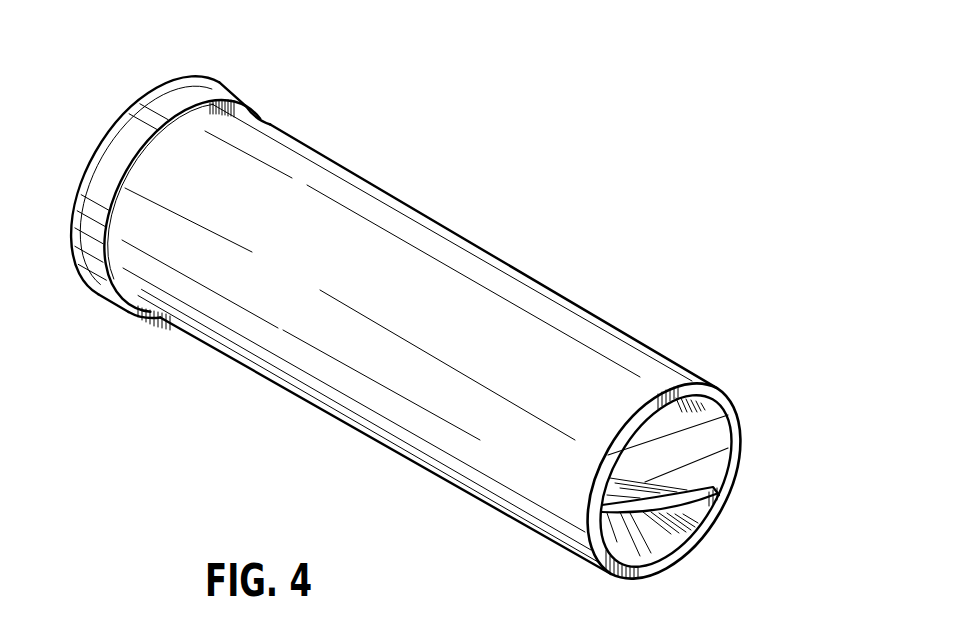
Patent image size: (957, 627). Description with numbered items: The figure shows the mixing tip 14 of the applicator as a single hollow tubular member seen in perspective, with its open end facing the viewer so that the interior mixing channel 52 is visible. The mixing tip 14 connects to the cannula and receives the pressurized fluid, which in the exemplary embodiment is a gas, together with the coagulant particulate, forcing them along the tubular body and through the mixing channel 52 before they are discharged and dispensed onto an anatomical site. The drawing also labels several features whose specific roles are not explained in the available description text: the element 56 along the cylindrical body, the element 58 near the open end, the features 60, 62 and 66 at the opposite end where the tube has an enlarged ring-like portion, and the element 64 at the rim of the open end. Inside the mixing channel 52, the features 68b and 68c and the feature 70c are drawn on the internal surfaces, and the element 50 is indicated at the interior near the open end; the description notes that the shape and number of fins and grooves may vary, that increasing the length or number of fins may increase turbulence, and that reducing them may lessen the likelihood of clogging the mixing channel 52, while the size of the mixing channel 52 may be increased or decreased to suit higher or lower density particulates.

The mixing tip 14 is at (512, 176).
The inner surface 50 is at (716, 494).
The mixing channel 52 is at (668, 445).
The tubular body 56 is at (421, 213).
The distal end 58 is at (656, 353).
The flange 60 is at (212, 91).
The outer surface 62 is at (70, 238).
The rim 64 is at (733, 418).
The step 66 is at (268, 122).
The groove 68b is at (711, 411).
The groove 68c is at (684, 528).
The ridge 70c is at (697, 450).